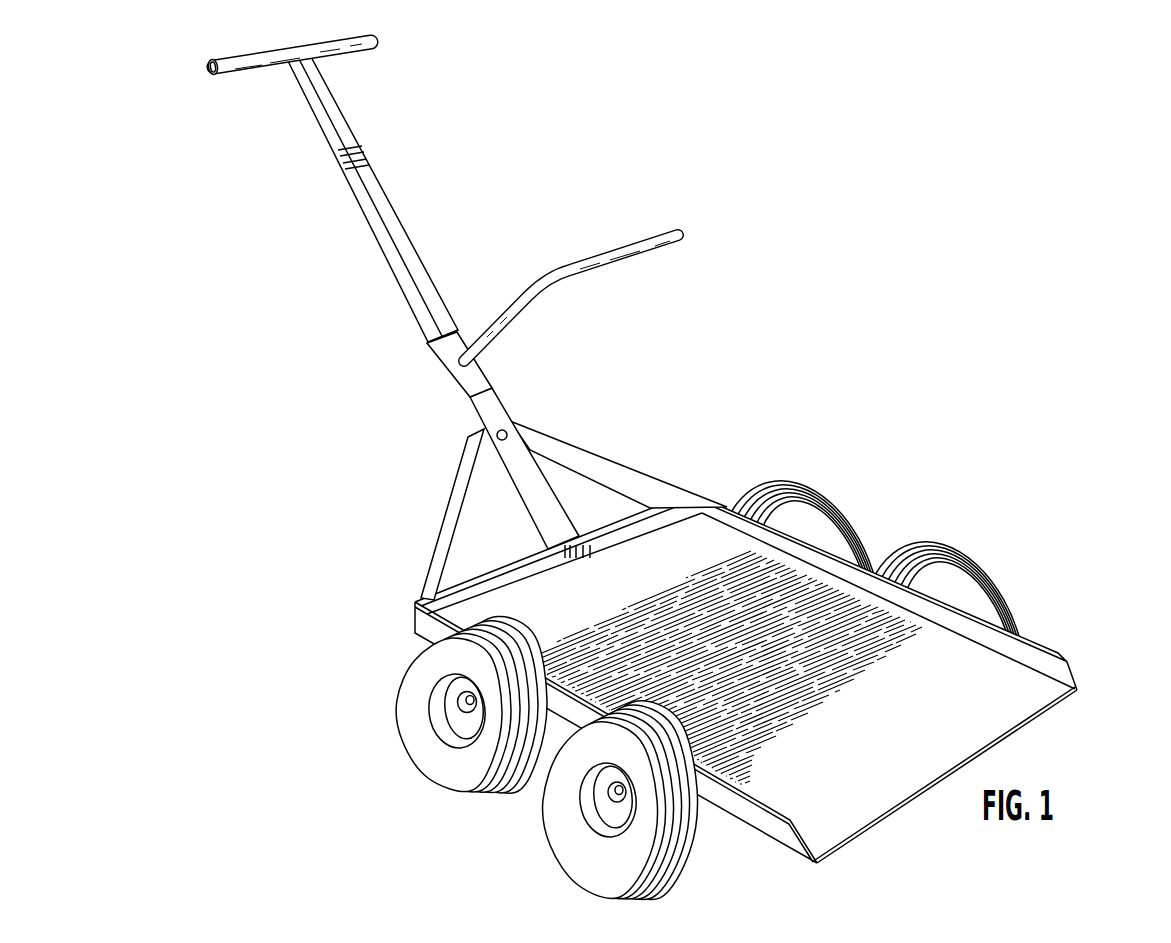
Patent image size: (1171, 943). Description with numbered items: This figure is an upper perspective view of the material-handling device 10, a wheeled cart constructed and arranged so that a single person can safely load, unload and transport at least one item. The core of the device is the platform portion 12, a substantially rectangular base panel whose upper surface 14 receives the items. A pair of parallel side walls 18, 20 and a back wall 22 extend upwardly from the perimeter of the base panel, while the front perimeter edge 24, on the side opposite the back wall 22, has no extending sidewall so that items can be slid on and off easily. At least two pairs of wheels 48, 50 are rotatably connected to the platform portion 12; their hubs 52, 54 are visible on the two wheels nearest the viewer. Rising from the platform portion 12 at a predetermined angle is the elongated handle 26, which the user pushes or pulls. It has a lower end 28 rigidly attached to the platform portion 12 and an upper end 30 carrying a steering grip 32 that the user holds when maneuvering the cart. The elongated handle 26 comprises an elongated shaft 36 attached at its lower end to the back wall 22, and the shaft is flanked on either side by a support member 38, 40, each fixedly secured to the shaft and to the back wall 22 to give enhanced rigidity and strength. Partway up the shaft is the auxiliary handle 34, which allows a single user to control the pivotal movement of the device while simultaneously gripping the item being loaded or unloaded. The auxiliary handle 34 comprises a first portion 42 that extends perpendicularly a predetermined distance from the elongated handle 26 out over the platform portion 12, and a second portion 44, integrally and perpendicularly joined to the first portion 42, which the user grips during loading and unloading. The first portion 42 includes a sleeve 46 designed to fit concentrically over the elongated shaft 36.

The material-handling device 10 is at (874, 318).
The platform portion 12 is at (1083, 647).
The upper surface 14 is at (997, 710).
The side wall 18 is at (1000, 643).
The side wall 20 is at (797, 842).
The back wall 22 is at (493, 585).
The front perimeter edge 24 is at (1005, 740).
The elongated handle 26 is at (471, 214).
The lower end 28 is at (679, 452).
The upper end 30 is at (360, 96).
The steering grip 32 is at (250, 63).
The auxiliary handle 34 is at (632, 276).
The elongated shaft 36 is at (410, 285).
The support member 38 is at (467, 505).
The support member 40 is at (582, 463).
The first portion 42 is at (508, 323).
The second portion 44 is at (607, 253).
The sleeve 46 is at (480, 383).
The wheels 48 is at (553, 865).
The wheels 50 is at (409, 769).
The hub of wheel 48 52 is at (610, 793).
The hub of wheel 50 54 is at (462, 703).